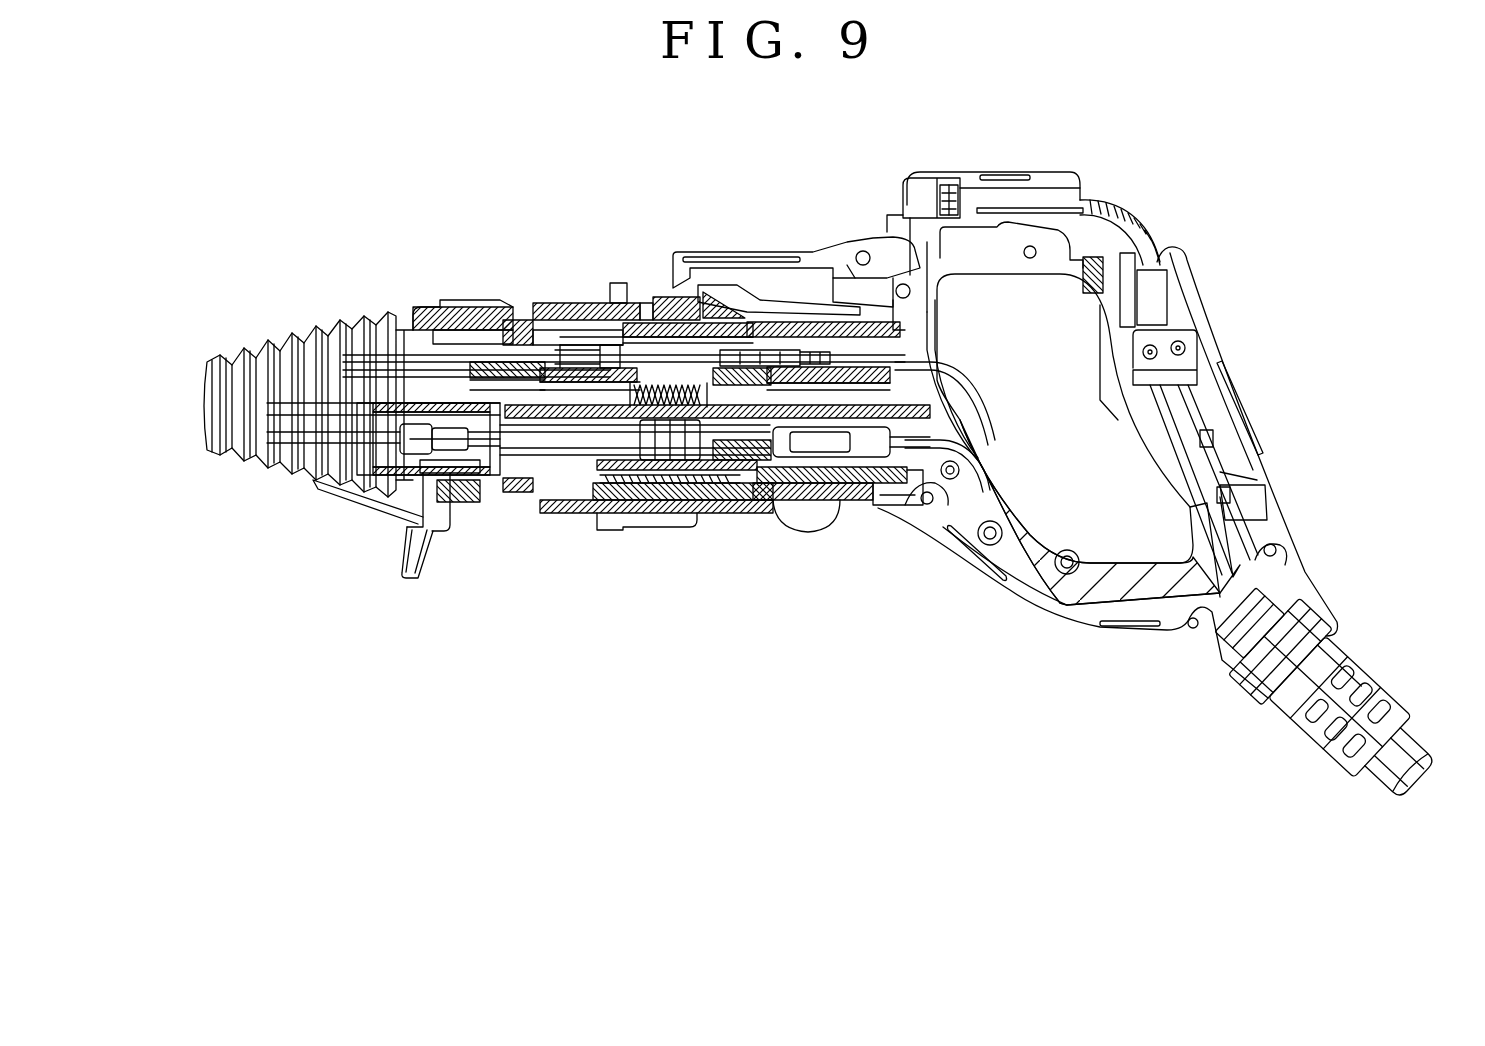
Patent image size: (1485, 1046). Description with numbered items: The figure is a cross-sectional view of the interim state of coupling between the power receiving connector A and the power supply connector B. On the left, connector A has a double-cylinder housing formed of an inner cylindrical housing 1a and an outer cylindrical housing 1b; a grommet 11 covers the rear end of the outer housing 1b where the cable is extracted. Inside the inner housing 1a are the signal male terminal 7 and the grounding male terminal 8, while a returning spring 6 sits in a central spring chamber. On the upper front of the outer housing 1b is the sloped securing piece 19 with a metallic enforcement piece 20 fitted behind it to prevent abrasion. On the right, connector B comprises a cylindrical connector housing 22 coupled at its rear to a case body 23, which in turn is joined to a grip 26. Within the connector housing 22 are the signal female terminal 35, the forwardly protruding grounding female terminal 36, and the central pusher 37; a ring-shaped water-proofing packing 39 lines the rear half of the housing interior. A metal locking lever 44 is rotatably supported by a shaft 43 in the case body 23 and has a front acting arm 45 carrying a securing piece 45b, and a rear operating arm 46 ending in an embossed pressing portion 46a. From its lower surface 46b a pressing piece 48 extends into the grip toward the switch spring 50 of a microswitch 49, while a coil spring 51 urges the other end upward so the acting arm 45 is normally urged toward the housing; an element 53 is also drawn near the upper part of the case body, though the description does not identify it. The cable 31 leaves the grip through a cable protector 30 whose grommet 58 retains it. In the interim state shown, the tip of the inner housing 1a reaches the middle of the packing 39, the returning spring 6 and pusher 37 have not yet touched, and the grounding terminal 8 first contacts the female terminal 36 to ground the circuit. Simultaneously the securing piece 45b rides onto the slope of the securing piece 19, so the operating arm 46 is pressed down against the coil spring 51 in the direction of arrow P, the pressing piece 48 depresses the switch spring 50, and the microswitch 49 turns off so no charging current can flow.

The grommet 11 is at (290, 340).
The inner cylindrical housing 1a is at (585, 508).
The outer cylindrical housing 1b is at (545, 520).
The grounding male terminal 8 is at (530, 498).
The signal male terminal 7 is at (557, 335).
The returning spring 6 is at (612, 342).
The metallic enforcement piece 20 is at (662, 302).
The securing piece 19 is at (690, 305).
The securing piece 45b is at (695, 290).
The signal female terminal 35 is at (770, 322).
The acting arm 45 is at (793, 285).
The locking lever 44 is at (903, 262).
The terminal box 53 is at (912, 200).
The operating arm 46 is at (1047, 200).
The pressing portion 46a is at (1128, 212).
The lower surface of the pressing portion 46b is at (1150, 250).
The pressing piece 48 is at (1150, 292).
The switch spring 50 is at (1160, 322).
The microswitch 49 is at (1200, 355).
The coil spring 51 is at (1083, 290).
The shaft 43 is at (910, 296).
The grip 26 is at (1272, 420).
The grommet 58 is at (1316, 622).
The cable protector 30 is at (1367, 660).
The cable 31 is at (1413, 753).
The case body 23 is at (956, 540).
The grounding female terminal 36 is at (722, 497).
The pusher 37 is at (757, 513).
The water-proofing packing 39 is at (672, 530).
The connector housing 22 is at (628, 520).
The power receiving connector A is at (430, 292).
The power supply connector B is at (1255, 217).
The arrow P is at (1107, 320).